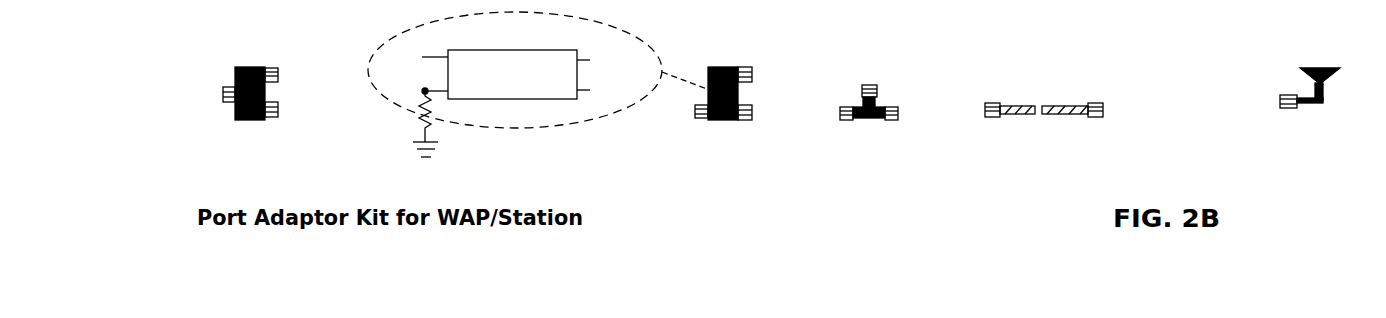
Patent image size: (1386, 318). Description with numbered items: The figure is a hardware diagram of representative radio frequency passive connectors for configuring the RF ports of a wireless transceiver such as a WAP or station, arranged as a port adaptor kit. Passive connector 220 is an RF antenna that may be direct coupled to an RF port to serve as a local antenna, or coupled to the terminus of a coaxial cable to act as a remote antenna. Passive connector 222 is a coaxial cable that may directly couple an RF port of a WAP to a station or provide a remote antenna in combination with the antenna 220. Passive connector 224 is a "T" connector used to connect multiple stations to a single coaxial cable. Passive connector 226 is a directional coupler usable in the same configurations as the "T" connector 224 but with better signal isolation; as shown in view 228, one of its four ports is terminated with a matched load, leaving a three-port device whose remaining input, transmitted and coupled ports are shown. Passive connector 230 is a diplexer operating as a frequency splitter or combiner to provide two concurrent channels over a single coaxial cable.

The RF antenna 220 is at (1327, 98).
The coaxial cable 222 is at (1103, 102).
The "T" connector 224 is at (862, 105).
The directional coupler 226 is at (733, 67).
The view of directional coupler ports 228 is at (368, 73).
The diplexer 230 is at (257, 67).